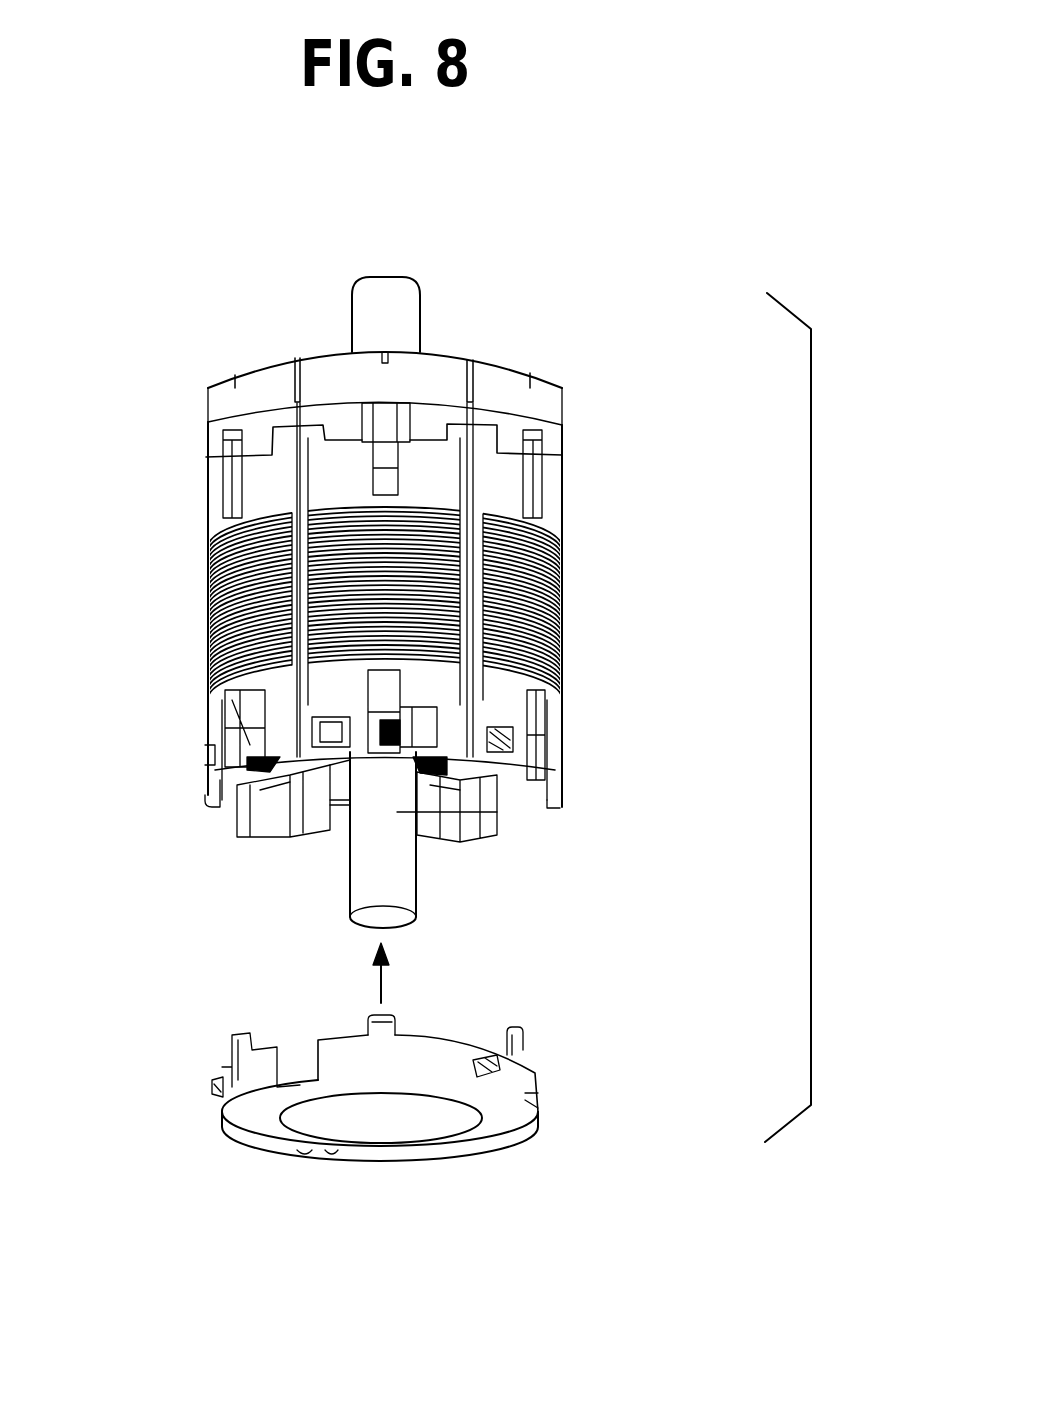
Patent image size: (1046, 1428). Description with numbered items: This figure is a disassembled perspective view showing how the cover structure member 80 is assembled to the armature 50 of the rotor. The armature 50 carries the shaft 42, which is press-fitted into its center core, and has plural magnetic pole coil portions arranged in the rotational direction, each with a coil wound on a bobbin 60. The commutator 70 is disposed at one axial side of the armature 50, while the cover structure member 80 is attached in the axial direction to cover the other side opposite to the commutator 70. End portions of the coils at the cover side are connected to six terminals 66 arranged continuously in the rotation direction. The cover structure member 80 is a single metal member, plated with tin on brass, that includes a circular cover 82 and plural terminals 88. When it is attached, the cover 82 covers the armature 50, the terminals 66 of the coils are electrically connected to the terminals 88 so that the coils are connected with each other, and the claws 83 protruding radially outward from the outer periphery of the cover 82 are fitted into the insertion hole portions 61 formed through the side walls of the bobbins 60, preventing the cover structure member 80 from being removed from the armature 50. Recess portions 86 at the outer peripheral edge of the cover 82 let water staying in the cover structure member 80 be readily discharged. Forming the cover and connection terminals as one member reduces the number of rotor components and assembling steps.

The shaft 42 is at (388, 298).
The commutator 70 is at (497, 357).
The bobbin 60 is at (434, 478).
The armature 50 is at (572, 545).
The terminals 66 is at (380, 713).
The insertion hole portion 61 is at (205, 758).
The terminals 88 is at (238, 1040).
The claws 83 is at (217, 1085).
The cover 82 is at (250, 1130).
The recess portions 86 is at (273, 1120).
The cover structure member 80 is at (379, 1131).